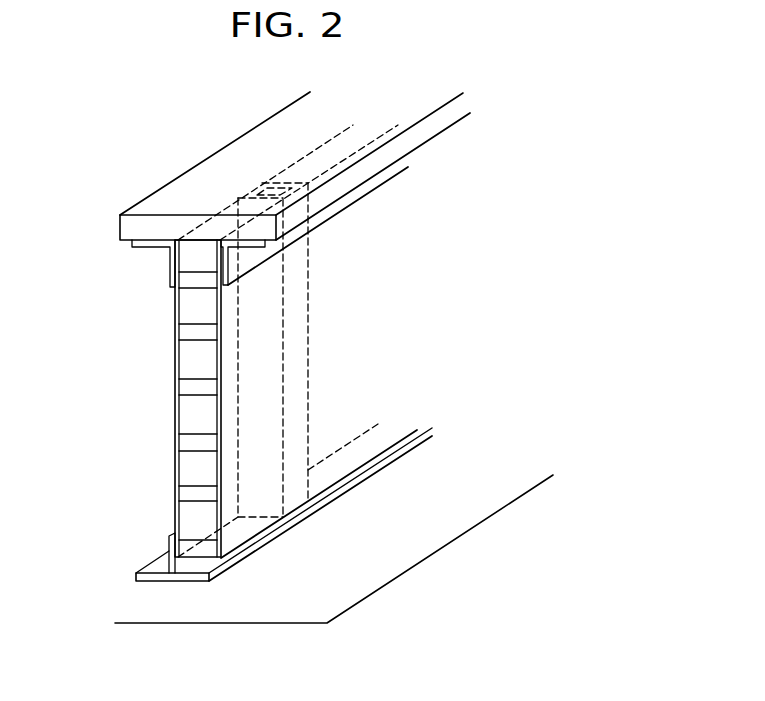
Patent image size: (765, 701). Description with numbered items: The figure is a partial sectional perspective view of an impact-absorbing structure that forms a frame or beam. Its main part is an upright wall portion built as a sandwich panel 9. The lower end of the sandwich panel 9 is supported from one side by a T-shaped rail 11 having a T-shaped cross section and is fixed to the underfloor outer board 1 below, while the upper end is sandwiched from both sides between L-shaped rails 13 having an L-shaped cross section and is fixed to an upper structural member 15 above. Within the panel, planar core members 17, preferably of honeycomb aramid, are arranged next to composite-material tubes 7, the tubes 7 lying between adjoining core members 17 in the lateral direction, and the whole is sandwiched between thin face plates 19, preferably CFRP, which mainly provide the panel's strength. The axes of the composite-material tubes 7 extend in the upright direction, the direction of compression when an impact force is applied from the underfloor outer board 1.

The underfloor outer board 1 is at (330, 586).
The composite-material tube 7 is at (300, 393).
The sandwich panel 9 is at (462, 305).
The T-shaped rail 11 is at (153, 567).
The L-shaped rail 13 is at (170, 257).
The upper structural member 15 is at (253, 148).
The core member 17 is at (193, 465).
The face plate 19 is at (175, 411).